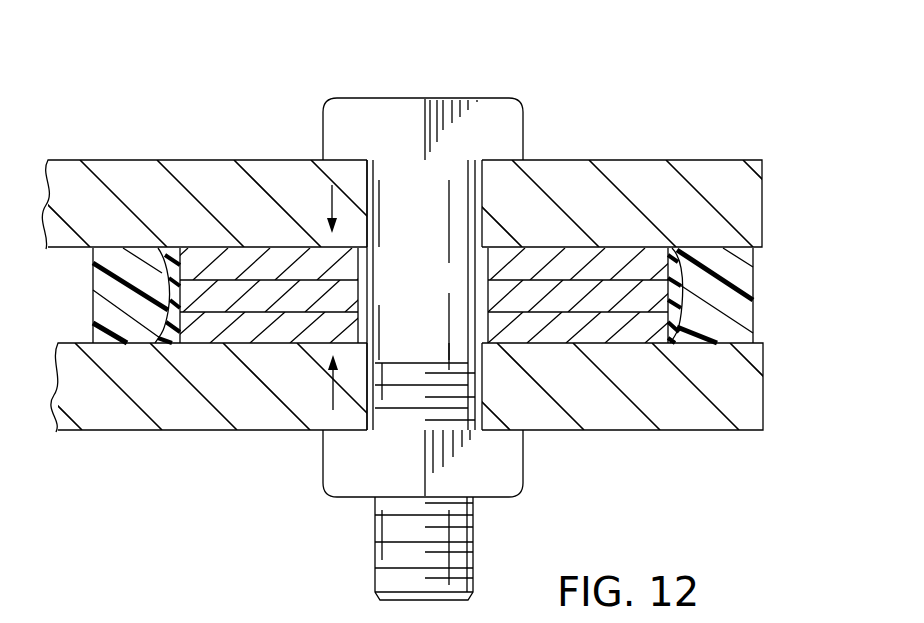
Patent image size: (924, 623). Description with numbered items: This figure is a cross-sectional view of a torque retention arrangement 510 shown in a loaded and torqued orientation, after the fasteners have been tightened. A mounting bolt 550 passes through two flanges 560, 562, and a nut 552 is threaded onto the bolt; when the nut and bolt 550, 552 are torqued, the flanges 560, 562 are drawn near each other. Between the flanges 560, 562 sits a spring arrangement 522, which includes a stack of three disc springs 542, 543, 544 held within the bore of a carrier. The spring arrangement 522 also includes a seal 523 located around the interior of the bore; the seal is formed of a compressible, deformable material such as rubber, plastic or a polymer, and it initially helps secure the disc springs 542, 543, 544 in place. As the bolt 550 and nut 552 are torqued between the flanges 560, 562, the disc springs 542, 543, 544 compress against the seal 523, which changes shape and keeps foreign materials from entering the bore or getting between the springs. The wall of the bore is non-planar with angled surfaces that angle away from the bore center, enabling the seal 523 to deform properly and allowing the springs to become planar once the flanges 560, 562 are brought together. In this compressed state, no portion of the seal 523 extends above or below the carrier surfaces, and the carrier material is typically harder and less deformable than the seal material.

The torque retention arrangement 510 is at (422, 309).
The spring arrangement 522 is at (415, 295).
The seal 523 is at (682, 253).
The disc spring 542 is at (278, 260).
The disc spring 543 is at (600, 302).
The disc spring 544 is at (242, 338).
The mounting bolt 550 is at (492, 115).
The nut 552 is at (502, 483).
The flange 560 is at (750, 205).
The flange 562 is at (752, 400).